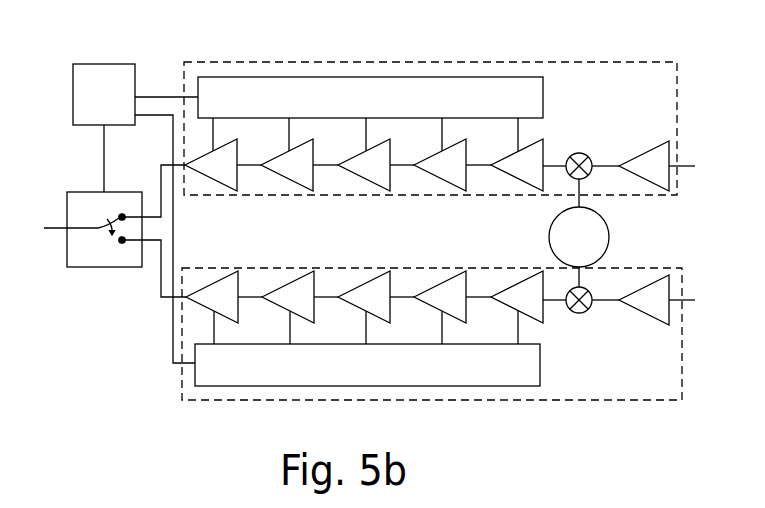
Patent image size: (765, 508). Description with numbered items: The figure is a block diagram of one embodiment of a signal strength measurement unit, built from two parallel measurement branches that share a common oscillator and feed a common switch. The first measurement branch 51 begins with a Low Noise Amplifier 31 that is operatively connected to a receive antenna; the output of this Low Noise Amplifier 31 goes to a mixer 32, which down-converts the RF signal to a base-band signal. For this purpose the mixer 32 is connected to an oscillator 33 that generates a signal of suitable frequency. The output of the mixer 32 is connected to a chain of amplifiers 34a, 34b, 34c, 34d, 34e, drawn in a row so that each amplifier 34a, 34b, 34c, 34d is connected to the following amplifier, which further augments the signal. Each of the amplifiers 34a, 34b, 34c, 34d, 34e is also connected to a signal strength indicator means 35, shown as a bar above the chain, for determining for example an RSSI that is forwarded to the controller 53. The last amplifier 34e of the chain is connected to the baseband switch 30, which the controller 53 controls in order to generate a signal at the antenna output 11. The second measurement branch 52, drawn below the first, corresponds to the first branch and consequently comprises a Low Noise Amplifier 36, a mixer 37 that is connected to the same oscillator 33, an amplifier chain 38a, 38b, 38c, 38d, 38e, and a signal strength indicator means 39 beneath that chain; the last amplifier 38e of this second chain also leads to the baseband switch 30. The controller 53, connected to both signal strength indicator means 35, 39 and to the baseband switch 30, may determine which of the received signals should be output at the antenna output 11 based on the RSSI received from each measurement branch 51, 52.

The antenna output 11 is at (52, 228).
The baseband switch 30 is at (92, 267).
The Low Noise Amplifier 31 is at (645, 153).
The mixer 32 is at (579, 153).
The oscillator 33 is at (609, 237).
The amplifier 34a is at (518, 179).
The amplifier 34b is at (442, 179).
The amplifier 34c is at (366, 179).
The amplifier 34d is at (289, 179).
The last amplifier 34e is at (213, 179).
The signal strength indicator means 35 is at (243, 77).
The Low Noise Amplifier 36 is at (645, 313).
The mixer 37 is at (579, 313).
The amplifier 38a is at (518, 283).
The amplifier 38b is at (442, 283).
The amplifier 38c is at (366, 283).
The amplifier 38d is at (290, 283).
The amplifier 38e is at (214, 283).
The signal strength indicator means 39 is at (228, 386).
The first measurement branch 51 is at (404, 62).
The second measurement branch 52 is at (560, 401).
The controller 53 is at (106, 63).